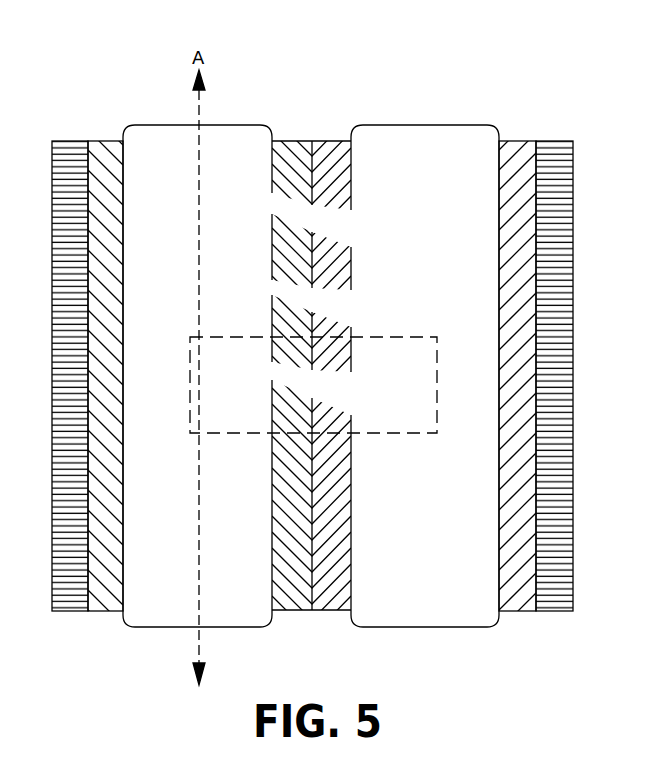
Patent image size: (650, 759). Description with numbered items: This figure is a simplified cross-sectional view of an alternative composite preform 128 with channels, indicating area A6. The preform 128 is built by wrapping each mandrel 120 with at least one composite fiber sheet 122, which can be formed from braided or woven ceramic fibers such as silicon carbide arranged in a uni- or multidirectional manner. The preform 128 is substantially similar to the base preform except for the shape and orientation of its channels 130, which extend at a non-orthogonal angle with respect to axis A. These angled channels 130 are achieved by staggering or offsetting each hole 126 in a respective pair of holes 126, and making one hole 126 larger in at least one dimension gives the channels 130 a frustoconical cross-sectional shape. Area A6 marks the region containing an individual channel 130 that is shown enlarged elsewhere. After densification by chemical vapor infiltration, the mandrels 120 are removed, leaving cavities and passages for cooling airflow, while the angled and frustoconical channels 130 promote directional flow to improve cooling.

The mandrel 120 is at (244, 552).
The composite fiber sheet 122 is at (108, 603).
The hole 126 is at (279, 213).
The alternative preform 128 is at (431, 88).
The channel 130 is at (330, 227).
The area A6 is at (400, 434).